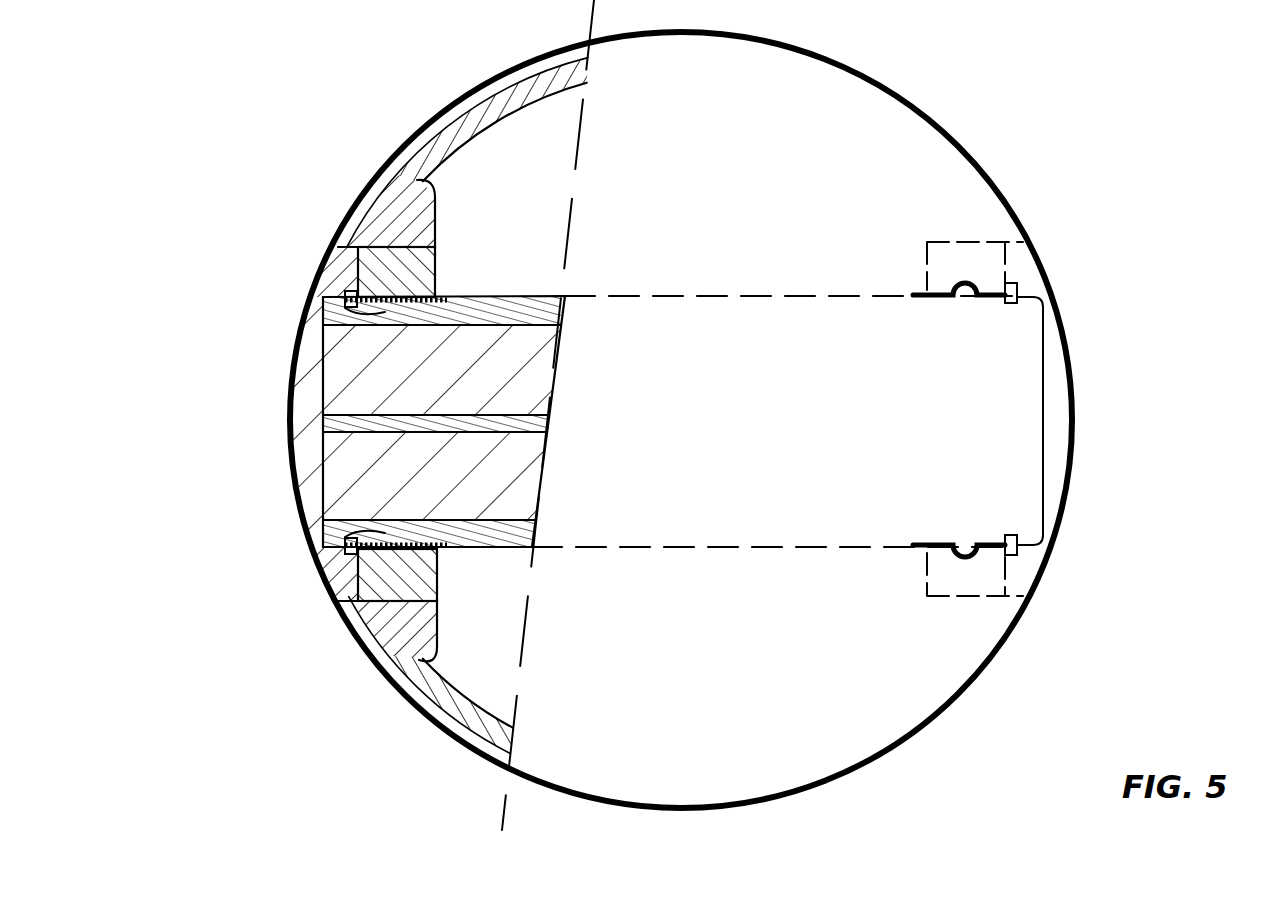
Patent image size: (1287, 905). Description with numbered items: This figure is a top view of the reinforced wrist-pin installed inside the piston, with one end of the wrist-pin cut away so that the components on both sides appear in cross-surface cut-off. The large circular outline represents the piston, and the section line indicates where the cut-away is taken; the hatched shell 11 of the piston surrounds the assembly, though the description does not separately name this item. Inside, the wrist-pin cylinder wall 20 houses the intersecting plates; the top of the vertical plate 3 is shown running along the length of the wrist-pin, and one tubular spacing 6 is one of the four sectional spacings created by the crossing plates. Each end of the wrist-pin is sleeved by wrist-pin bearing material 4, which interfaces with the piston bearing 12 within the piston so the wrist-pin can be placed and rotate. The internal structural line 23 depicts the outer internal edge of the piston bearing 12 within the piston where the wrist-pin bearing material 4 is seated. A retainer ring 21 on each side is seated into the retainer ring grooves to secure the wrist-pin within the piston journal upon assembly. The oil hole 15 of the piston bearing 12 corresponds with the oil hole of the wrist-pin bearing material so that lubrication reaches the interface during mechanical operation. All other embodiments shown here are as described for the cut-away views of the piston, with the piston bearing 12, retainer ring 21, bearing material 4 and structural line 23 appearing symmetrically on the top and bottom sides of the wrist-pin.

The vertical plate 3 is at (342, 430).
The wrist-pin bearing material 4 is at (425, 323).
The tubular spacing 6 is at (342, 384).
The spherical housing shell 11 is at (457, 134).
The piston bearing 12 is at (345, 272).
The oil hole 15 is at (436, 250).
The wrist-pin cylinder wall 20 is at (340, 322).
The retainer ring 21 is at (347, 294).
The internal structural line 23 is at (424, 302).